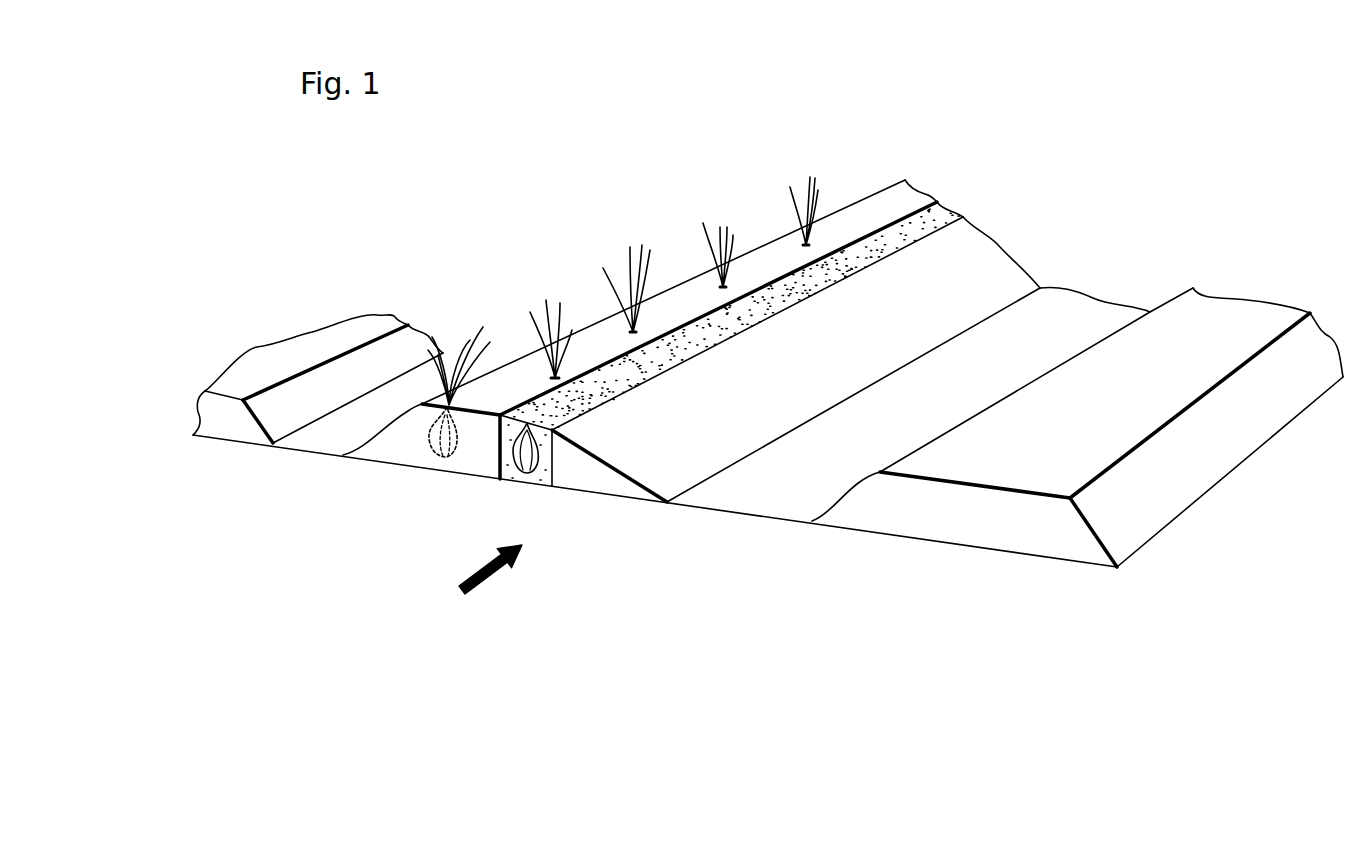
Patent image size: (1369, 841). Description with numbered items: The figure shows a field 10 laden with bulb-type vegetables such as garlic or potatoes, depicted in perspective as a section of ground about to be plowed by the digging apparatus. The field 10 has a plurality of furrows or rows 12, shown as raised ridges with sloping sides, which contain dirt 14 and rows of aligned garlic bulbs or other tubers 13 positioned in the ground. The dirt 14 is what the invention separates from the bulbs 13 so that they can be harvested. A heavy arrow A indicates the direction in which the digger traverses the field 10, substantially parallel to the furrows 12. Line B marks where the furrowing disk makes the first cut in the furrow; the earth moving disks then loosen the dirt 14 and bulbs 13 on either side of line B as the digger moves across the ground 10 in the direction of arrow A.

The field 10 is at (702, 589).
The furrows 12 is at (440, 481).
The garlic bulbs 13 is at (437, 447).
The dirt 14 is at (697, 443).
The line B is at (670, 328).
The arrow A is at (488, 569).